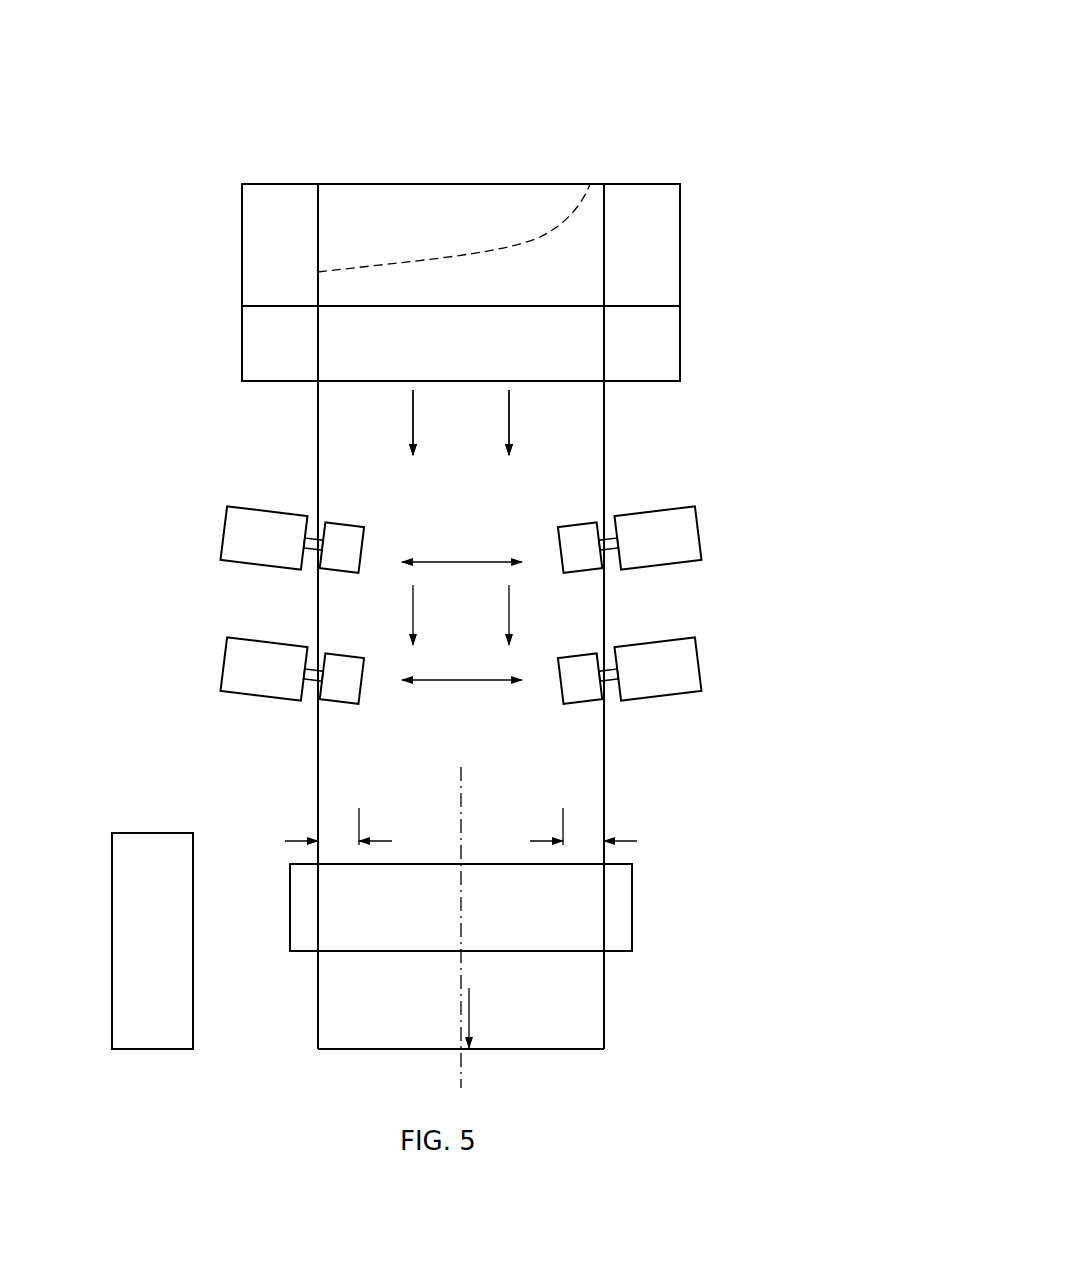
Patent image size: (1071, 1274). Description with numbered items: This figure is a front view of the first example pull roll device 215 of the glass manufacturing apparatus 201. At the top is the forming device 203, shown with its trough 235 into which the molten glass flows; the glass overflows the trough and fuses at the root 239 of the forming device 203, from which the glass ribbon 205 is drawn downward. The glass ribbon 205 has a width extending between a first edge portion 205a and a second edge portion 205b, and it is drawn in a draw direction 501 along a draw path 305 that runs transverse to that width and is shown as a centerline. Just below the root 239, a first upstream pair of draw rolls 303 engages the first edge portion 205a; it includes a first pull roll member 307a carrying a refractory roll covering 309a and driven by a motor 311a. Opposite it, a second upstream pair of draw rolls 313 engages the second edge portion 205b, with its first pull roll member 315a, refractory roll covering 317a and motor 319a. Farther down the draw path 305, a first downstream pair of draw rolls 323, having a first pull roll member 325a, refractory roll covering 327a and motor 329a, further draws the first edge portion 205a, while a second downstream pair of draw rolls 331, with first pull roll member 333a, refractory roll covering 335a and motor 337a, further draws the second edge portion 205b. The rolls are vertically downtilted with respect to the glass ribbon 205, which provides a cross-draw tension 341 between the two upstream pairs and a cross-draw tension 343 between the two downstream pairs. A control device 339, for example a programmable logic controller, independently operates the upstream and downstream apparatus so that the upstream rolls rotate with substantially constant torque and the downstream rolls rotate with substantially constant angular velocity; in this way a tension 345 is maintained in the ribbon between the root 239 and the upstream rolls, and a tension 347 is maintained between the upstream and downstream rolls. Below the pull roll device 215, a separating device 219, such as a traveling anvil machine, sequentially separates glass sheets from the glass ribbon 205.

The glass manufacturing apparatus 201 is at (708, 53).
The forming device 203 is at (503, 239).
The trough 235 is at (450, 186).
The root 239 is at (478, 382).
The glass ribbon 205 is at (318, 778).
The first edge portion 205a is at (338, 840).
The second edge portion 205b is at (584, 840).
The pull roll device 215 is at (174, 431).
The first upstream pair of draw rolls 303 is at (228, 525).
The first pull roll member 307a is at (291, 498).
The refractory roll covering 309a is at (342, 547).
The motor 311a is at (264, 537).
The second upstream pair of draw rolls 313 is at (697, 494).
The first pull roll member 315a is at (631, 484).
The refractory roll covering 317a is at (580, 547).
The motor 319a is at (658, 537).
The first downstream pair of draw rolls 323 is at (252, 677).
The first pull roll member 325a is at (284, 639).
The refractory roll covering 327a is at (342, 678).
The motor 329a is at (264, 668).
The second downstream pair of draw rolls 331 is at (695, 667).
The first pull roll member 333a is at (642, 642).
The refractory roll covering 335a is at (580, 678).
The motor 337a is at (658, 668).
The draw path 305 is at (462, 800).
The separating device 219 is at (632, 912).
The control device 339 is at (112, 922).
The cross-draw tension 341 is at (470, 562).
The cross-draw tension 343 is at (464, 680).
The tension 345 is at (413, 412).
The tension 347 is at (413, 610).
The draw direction 501 is at (470, 1010).